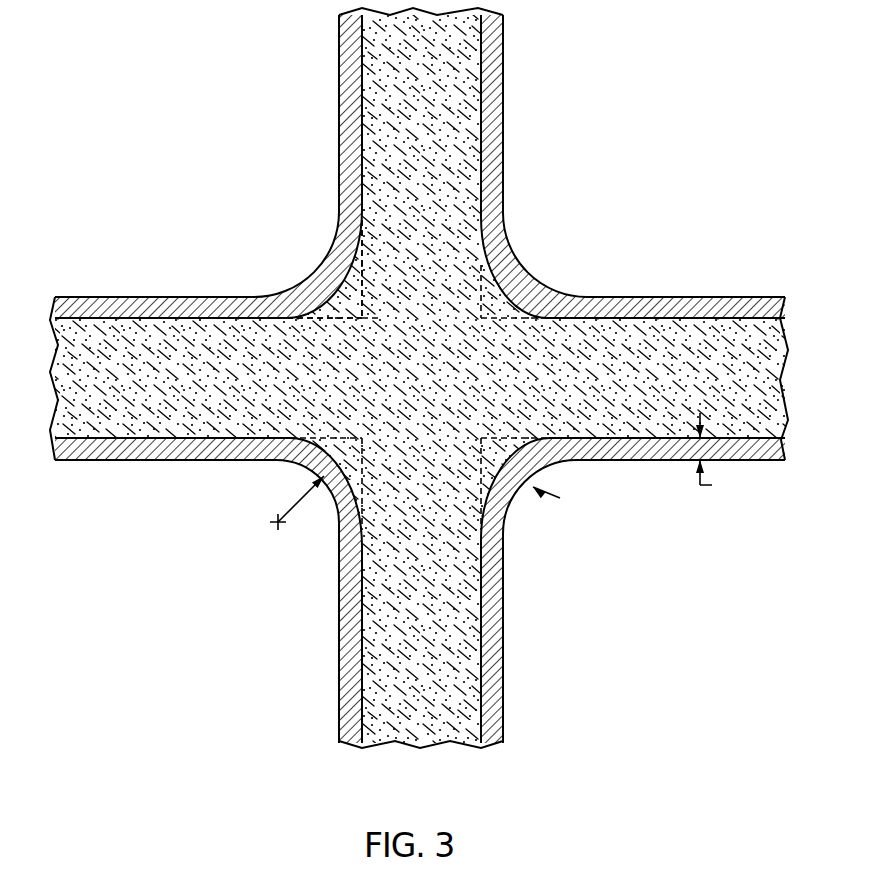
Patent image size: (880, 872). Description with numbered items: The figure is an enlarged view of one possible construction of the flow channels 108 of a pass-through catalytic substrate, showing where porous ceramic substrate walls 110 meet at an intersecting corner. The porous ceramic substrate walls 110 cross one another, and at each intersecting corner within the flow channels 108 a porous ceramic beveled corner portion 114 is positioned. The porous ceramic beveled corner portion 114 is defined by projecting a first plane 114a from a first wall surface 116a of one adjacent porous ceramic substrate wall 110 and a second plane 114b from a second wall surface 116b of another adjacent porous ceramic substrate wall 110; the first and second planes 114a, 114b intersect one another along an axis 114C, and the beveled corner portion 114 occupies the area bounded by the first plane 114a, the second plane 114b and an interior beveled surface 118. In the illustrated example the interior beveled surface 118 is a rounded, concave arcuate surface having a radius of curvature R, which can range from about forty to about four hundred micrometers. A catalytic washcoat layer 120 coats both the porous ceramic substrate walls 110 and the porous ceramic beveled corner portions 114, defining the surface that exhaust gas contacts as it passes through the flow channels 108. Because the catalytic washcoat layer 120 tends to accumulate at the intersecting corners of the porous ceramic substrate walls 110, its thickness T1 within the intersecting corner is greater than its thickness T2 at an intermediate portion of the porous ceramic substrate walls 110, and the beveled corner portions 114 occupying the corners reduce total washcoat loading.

The flow channel 108 is at (145, 100).
The porous ceramic substrate wall 110 is at (455, 117).
The porous ceramic beveled corner portion 114 is at (370, 307).
The first plane 114a is at (303, 320).
The second plane 114b is at (367, 272).
The axis 114C is at (377, 327).
The first wall surface 116a is at (128, 312).
The second wall surface 116b is at (360, 115).
The interior beveled surface 118 is at (321, 299).
The catalytic washcoat layer 120 is at (488, 666).
The radius of curvature R is at (298, 500).
The thickness of the catalytic washcoat layer within the intersecting corner T1 is at (559, 497).
The thickness of the washcoat layer at an intermediate portion of the walls T2 is at (717, 460).